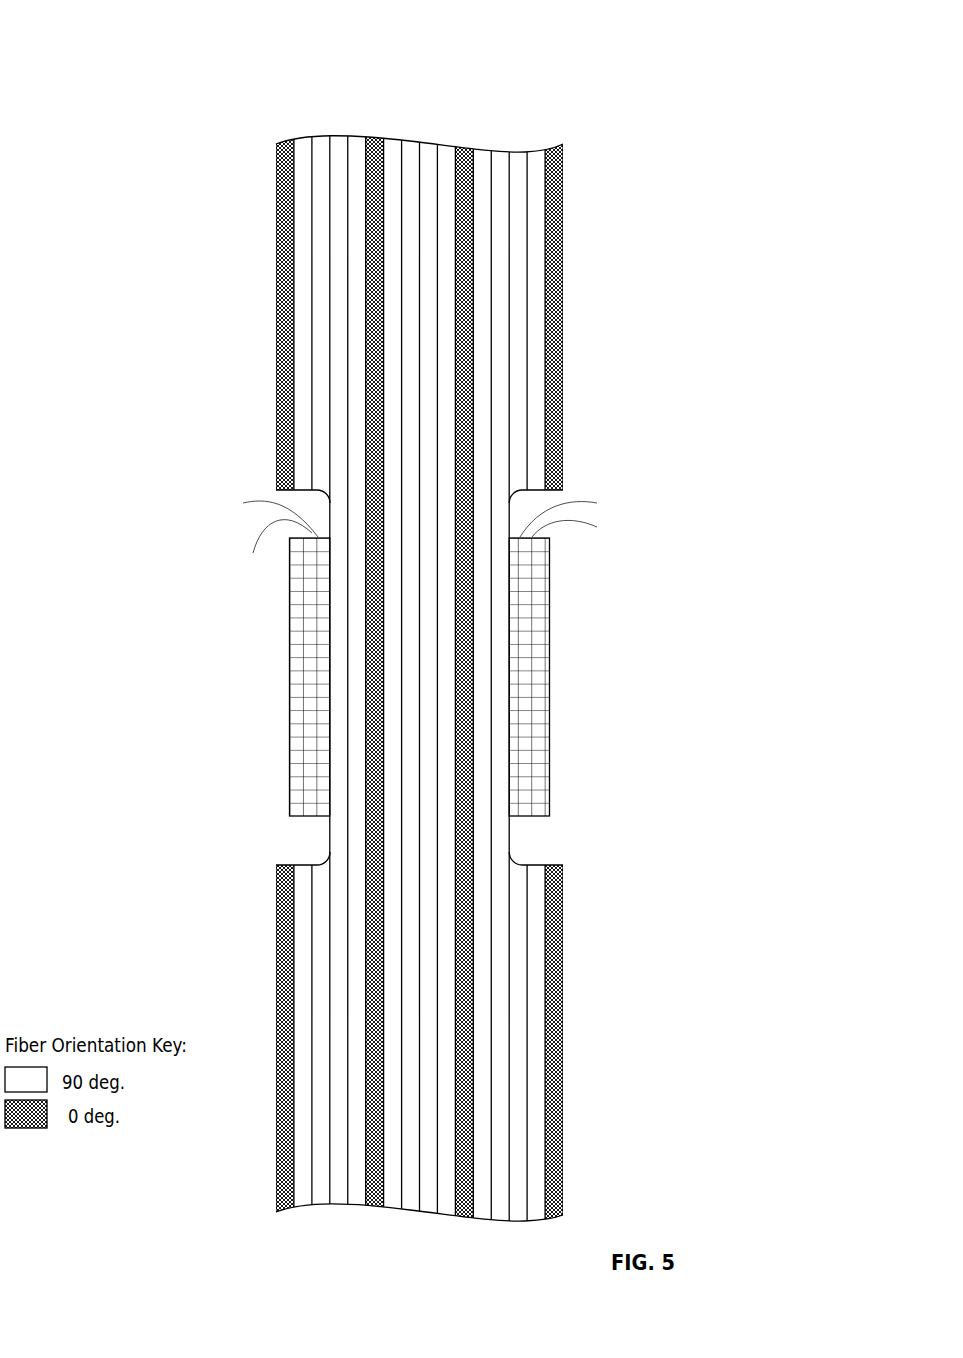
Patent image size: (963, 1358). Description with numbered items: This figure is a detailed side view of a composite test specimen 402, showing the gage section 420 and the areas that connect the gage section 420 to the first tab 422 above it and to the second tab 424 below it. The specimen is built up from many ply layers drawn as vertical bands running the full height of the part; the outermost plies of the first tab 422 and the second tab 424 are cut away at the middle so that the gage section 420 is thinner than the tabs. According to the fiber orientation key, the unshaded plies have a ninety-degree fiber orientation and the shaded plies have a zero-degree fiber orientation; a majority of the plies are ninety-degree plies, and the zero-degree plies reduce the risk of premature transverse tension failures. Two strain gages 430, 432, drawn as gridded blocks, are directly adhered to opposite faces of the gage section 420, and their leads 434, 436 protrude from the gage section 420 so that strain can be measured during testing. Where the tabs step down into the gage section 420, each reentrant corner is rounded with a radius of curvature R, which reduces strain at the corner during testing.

The composite test specimen 402 is at (115, 38).
The gage section 420 is at (190, 636).
The first tab 422 is at (190, 268).
The second tab 424 is at (200, 930).
The strain gage 430 is at (290, 650).
The strain gage 432 is at (550, 665).
The lead 434 is at (265, 525).
The lead 436 is at (580, 520).
The radius of curvature R is at (312, 855).